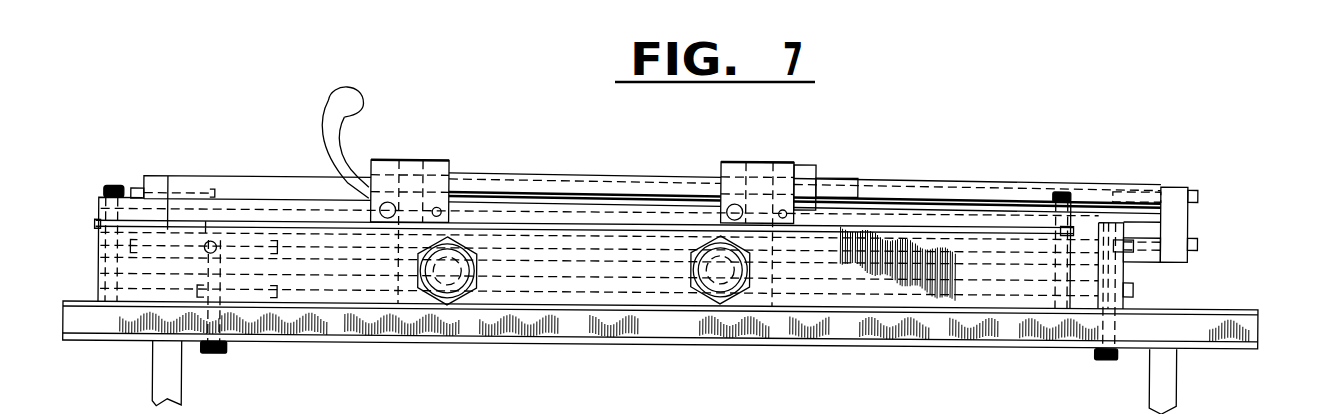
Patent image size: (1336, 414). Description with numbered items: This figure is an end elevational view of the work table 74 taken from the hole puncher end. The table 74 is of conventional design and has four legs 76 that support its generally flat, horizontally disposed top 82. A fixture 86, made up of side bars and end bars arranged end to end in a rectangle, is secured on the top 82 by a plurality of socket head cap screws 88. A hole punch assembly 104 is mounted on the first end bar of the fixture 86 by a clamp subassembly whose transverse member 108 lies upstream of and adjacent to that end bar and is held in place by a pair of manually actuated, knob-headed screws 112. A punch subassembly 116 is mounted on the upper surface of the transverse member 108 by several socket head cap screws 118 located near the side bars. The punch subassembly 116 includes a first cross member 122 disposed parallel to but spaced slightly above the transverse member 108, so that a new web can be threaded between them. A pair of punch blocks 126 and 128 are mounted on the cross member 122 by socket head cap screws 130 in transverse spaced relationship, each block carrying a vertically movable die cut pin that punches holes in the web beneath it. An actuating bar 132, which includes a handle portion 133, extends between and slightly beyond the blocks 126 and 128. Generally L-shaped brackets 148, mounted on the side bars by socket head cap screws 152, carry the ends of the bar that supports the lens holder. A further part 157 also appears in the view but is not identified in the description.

The table 74 is at (1258, 303).
The legs 76 is at (170, 361).
The top 82 is at (1198, 300).
The fixture 86 is at (1058, 148).
The socket head cap screws 88 is at (221, 352).
The hole punch assembly 104 is at (645, 354).
The transverse member 108 is at (333, 288).
The knob-headed screws 112 is at (447, 302).
The punch subassembly 116 is at (795, 154).
The socket head cap screws 118 is at (110, 185).
The first cross member 122 is at (925, 196).
The punch block 126 is at (778, 117).
The punch block 128 is at (433, 158).
The socket head cap screws 130 is at (379, 203).
The actuating bar 132 is at (560, 171).
The handle portion 133 is at (350, 98).
The L-shaped brackets 148 is at (1172, 214).
The socket head cap screws 152 is at (1197, 234).
The bolt 157 is at (1190, 184).